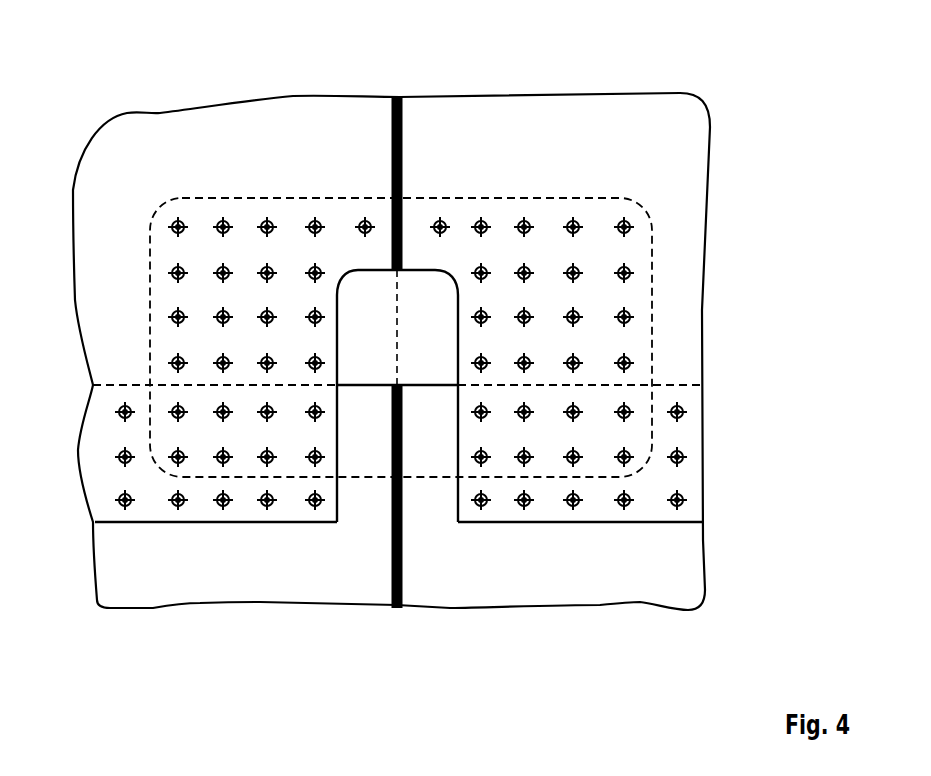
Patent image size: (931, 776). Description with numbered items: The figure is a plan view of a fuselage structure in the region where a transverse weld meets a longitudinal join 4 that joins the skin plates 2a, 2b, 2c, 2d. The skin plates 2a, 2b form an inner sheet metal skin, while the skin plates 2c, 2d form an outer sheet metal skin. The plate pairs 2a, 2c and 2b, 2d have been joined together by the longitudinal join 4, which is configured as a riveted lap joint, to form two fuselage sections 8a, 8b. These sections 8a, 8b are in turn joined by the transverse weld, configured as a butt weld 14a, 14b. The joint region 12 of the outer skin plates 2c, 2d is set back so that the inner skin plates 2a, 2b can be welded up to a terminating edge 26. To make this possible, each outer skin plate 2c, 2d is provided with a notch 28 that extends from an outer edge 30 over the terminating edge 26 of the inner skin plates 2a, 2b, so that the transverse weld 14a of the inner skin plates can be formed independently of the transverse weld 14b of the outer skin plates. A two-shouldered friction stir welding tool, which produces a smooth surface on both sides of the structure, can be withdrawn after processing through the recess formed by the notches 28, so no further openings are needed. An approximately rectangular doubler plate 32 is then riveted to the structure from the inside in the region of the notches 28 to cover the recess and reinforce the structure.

The skin plate 2a is at (222, 577).
The skin plate 2b is at (592, 577).
The skin plate 2c is at (262, 158).
The skin plate 2d is at (537, 156).
The longitudinal join 4 is at (710, 405).
The section 8a is at (192, 610).
The section 8b is at (557, 615).
The joint region 12 is at (373, 108).
The transverse weld 14a is at (403, 420).
The transverse weld 14b is at (402, 172).
The terminating edge 26 is at (368, 383).
The notch 28 is at (340, 432).
The outer edge 30 is at (275, 522).
The doubler plate 32 is at (627, 293).